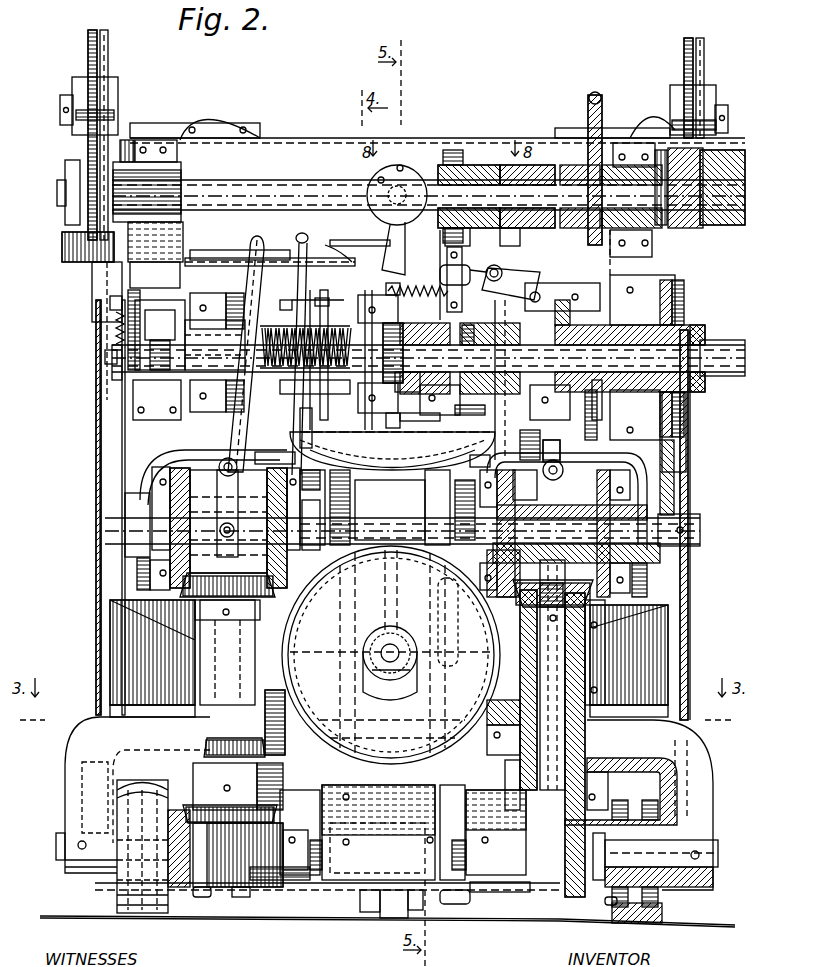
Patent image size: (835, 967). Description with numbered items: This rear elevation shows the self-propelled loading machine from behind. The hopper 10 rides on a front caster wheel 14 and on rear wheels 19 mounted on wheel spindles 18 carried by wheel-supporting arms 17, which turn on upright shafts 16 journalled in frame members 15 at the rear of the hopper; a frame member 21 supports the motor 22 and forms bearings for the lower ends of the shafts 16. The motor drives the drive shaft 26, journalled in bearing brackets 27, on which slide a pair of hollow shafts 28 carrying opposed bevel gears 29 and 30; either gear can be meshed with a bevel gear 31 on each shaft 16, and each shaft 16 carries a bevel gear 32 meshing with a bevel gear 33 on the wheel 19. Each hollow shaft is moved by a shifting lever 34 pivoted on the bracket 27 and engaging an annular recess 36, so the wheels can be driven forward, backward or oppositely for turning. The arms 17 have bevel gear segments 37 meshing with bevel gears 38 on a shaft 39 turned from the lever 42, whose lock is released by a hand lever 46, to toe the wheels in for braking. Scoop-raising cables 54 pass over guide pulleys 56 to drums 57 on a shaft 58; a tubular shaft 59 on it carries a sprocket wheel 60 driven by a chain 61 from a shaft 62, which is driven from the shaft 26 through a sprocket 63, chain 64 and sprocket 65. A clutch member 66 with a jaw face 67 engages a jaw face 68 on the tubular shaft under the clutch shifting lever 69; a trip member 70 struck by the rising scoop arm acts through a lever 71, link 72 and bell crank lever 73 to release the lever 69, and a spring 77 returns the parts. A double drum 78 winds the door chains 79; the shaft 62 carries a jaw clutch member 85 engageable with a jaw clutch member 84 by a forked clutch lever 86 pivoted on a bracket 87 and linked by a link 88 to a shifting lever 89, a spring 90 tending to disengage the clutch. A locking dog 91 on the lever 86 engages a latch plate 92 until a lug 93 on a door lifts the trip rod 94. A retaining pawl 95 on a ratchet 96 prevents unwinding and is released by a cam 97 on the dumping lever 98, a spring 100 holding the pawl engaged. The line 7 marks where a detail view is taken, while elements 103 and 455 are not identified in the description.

The frame plate 7 is at (104, 296).
The bin or hopper 10 is at (98, 428).
The caster wheel 14 is at (385, 918).
The frame members 15 is at (110, 642).
The upright shafts 16 is at (236, 896).
The wheel-supporting arms 17 is at (64, 770).
The wheel spindles 18 is at (55, 846).
The wheels 19 is at (142, 918).
The frame member 21 is at (345, 878).
The motor 22 is at (380, 752).
The drive shaft 26 is at (702, 534).
The bearing brackets 27 is at (222, 460).
The hollow shafts 28 is at (252, 502).
The bevel gear 29 is at (268, 456).
The bevel gear 30 is at (192, 450).
The bevel gear 31 is at (196, 612).
The bevel gears 32 is at (188, 800).
The bevel gears 33 is at (204, 892).
The shifting lever 34 is at (258, 300).
The annular recess 36 is at (232, 578).
The bevel gear segments 37 is at (204, 748).
The bevel gears 38 is at (232, 735).
The shaft 39 is at (478, 702).
The lever 42 is at (387, 443).
The hand lever 46 is at (298, 288).
The cables 54 is at (88, 72).
The guide pulley 56 is at (108, 76).
The drum 57 is at (68, 240).
The shaft 58 is at (266, 190).
The tubular shaft 59 is at (600, 240).
The sprocket wheel 60 is at (588, 118).
The chain 61 is at (594, 95).
The shaft 62 is at (712, 365).
The sprocket 63 is at (686, 478).
The chain 64 is at (686, 420).
The sprocket 65 is at (658, 318).
The clutch member 66 is at (470, 237).
The jaw face 67 is at (518, 239).
The jaw face 68 is at (540, 170).
The clutch shifting lever 69 is at (458, 162).
The trip member 70 is at (108, 346).
The lever 71 is at (110, 305).
The link 72 is at (200, 262).
The bell crank lever 73 is at (385, 230).
The spring 77 is at (351, 242).
The double drum 78 is at (268, 380).
The cables or chains 79 is at (319, 298).
The jaw clutch member 84 is at (407, 386).
The jaw clutch member 85 is at (480, 392).
The forked clutch lever 86 is at (511, 283).
The bracket 87 is at (562, 297).
The link 88 is at (496, 268).
The shifting lever 89 is at (447, 272).
The spring 90 is at (430, 296).
The locking dog 91 is at (478, 326).
The latch plate 92 is at (450, 408).
The lug 93 is at (456, 904).
The trip rod 94 is at (440, 412).
The retaining pawl 95 is at (180, 300).
The ratchet 96 is at (157, 400).
The cam 97 is at (110, 324).
The dumping lever 98 is at (236, 248).
The spring 100 is at (104, 356).
The rod 103 is at (288, 440).
The plate 455 is at (308, 396).